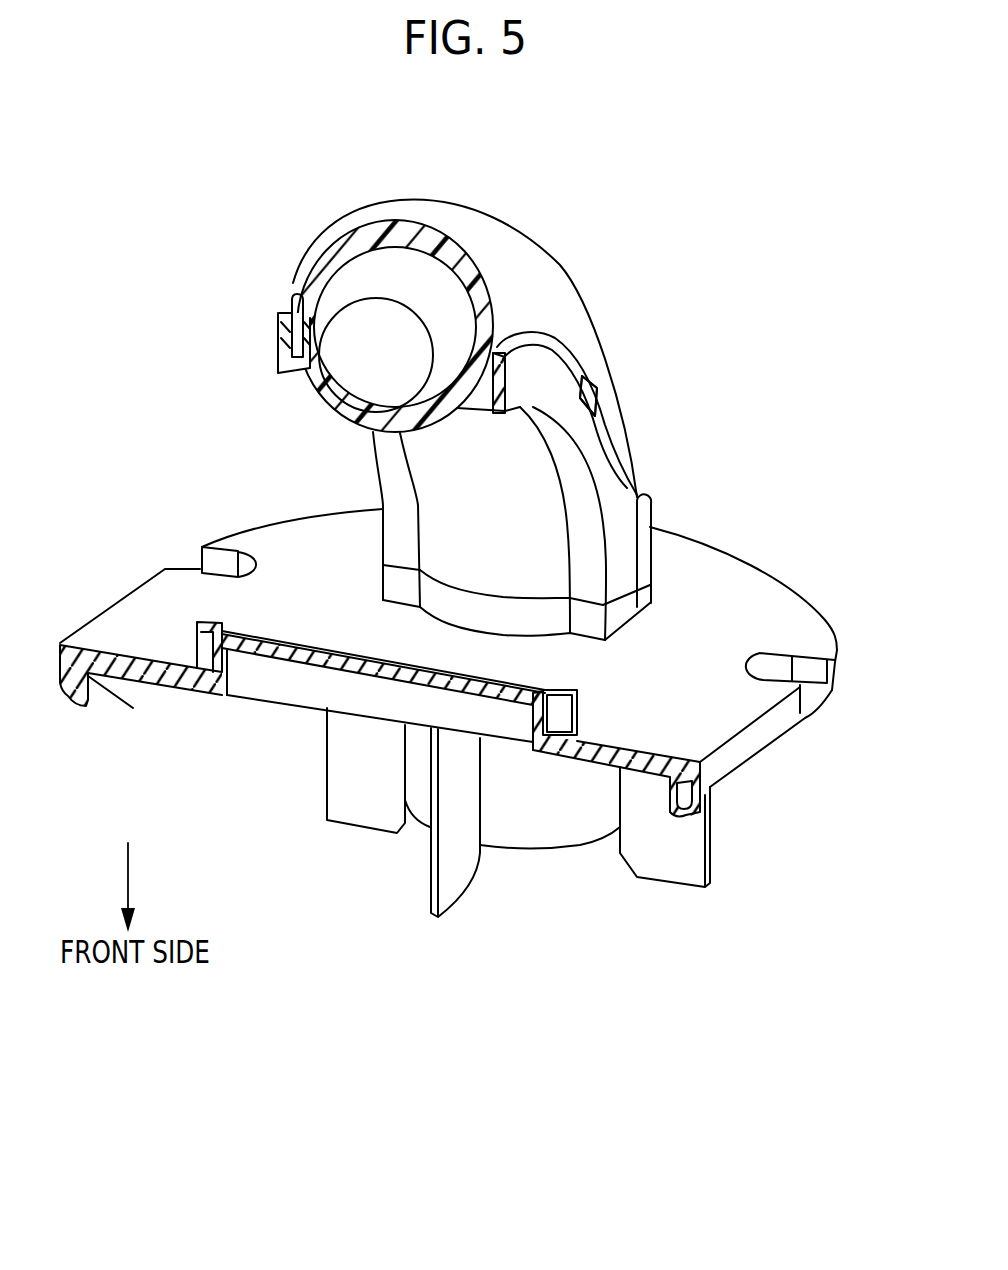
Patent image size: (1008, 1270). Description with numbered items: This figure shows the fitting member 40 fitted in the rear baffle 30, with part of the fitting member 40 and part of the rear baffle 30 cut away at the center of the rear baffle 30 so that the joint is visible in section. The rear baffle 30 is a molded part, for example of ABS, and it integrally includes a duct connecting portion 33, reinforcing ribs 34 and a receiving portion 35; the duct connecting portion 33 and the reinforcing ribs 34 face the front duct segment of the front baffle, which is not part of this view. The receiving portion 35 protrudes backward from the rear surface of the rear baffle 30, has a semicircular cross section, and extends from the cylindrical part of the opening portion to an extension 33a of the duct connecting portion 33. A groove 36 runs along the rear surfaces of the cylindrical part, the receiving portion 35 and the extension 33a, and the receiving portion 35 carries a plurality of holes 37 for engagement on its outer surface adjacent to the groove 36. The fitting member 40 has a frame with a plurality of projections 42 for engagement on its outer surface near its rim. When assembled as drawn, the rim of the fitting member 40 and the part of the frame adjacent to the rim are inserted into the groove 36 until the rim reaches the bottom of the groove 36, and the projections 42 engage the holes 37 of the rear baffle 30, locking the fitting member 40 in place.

The rear baffle 30 is at (750, 745).
The duct connecting portion 33 is at (577, 817).
The extension of the duct connecting portion 33a is at (647, 543).
The reinforcing ribs 34 is at (453, 887).
The receiving portion 35 is at (397, 477).
The groove 36 is at (293, 295).
The holes for engagement 37 is at (597, 400).
The fitting member 40 is at (471, 203).
The projections for engagement 42 is at (597, 400).